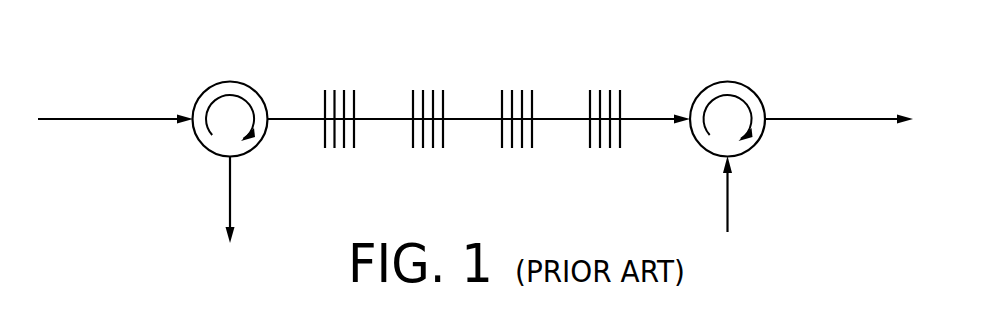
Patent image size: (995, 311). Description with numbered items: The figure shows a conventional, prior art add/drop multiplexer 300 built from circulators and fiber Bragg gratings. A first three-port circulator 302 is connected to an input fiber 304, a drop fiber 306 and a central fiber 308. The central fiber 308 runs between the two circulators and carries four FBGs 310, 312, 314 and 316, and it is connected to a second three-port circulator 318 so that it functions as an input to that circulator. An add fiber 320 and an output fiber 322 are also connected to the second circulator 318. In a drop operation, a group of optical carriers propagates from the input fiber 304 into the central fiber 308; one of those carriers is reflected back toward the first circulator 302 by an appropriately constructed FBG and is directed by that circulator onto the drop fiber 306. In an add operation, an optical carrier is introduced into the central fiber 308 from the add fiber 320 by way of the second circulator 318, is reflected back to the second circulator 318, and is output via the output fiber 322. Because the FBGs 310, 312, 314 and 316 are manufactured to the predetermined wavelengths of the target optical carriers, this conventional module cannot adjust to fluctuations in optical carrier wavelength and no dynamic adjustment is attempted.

The add/drop multiplexer 300 is at (128, 25).
The first three-port circulator 302 is at (213, 82).
The input fiber 304 is at (98, 121).
The drop fiber 306 is at (228, 193).
The central fiber 308 is at (301, 117).
The FBG 310 is at (340, 90).
The FBG 312 is at (428, 90).
The FBG 314 is at (516, 90).
The FBG 316 is at (605, 90).
The second three-port circulator 318 is at (748, 87).
The add fiber 320 is at (726, 193).
The output fiber 322 is at (855, 122).